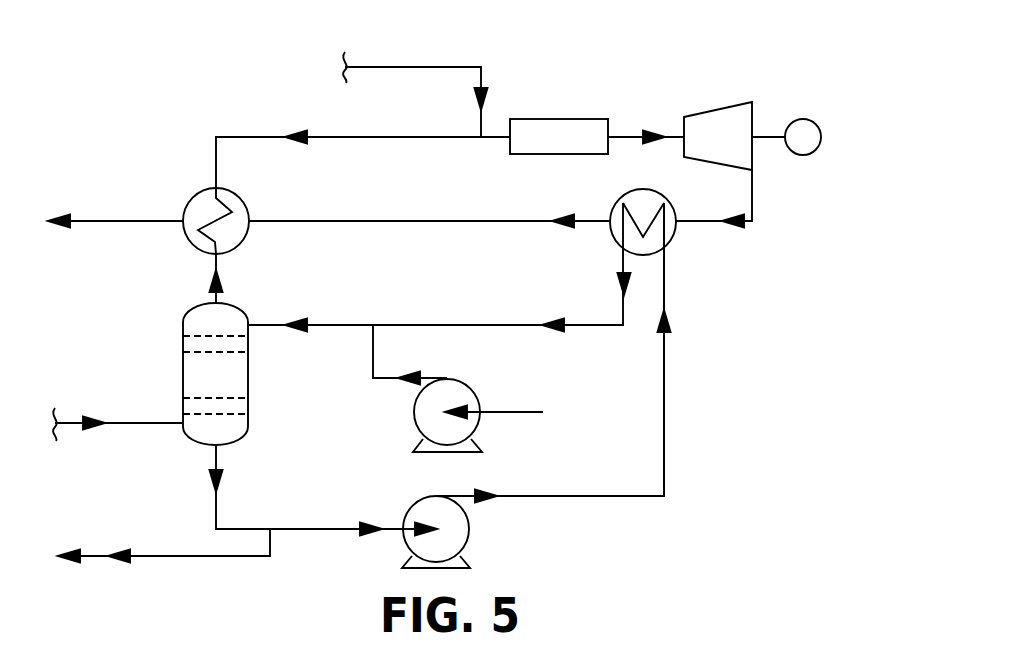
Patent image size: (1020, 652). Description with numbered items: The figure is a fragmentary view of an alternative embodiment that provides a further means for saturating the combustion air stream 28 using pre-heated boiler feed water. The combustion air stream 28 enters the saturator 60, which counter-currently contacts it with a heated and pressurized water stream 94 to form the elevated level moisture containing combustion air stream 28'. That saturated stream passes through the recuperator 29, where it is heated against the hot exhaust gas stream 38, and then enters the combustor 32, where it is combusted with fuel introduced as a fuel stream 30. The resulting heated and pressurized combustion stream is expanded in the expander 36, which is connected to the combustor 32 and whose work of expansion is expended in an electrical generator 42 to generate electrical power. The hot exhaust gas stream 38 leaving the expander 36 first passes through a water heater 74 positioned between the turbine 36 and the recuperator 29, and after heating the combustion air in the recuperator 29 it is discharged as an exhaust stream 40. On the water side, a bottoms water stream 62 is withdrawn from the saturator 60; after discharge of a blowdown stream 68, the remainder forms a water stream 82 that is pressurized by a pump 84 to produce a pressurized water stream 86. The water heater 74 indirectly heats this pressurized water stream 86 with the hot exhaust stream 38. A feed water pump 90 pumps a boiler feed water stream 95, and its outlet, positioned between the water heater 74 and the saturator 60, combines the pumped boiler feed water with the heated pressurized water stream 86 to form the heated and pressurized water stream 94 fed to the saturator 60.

The combustion air stream 28 is at (118, 444).
The elevated level moisture containing combustion air stream 28' is at (257, 278).
The recuperator 29 is at (243, 205).
The fuel stream 30 is at (480, 74).
The combustor 32 is at (540, 147).
The expander 36 is at (722, 130).
The hot exhaust gas stream 38 is at (752, 200).
The exhaust stream 40 is at (142, 222).
The electrical generator 42 is at (815, 130).
The saturator 60 is at (242, 367).
The bottoms water stream 62 is at (237, 528).
The blowdown stream 68 is at (170, 557).
The water heater 74 is at (613, 207).
The water stream 82 is at (335, 529).
The pump 84 is at (460, 535).
The pressurized water stream 86 is at (665, 430).
The feed water pump 90 is at (463, 395).
The heated and pressurized water stream 94 is at (343, 325).
The boiler feed water stream 95 is at (518, 413).